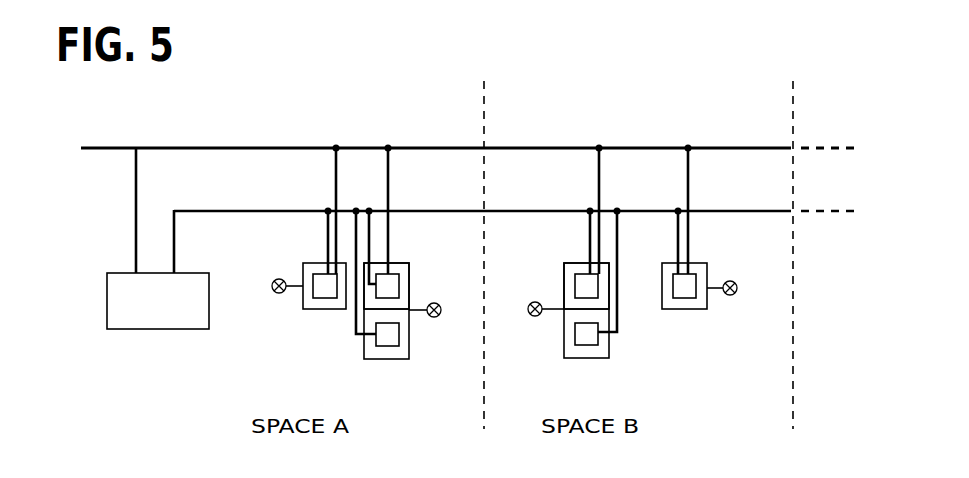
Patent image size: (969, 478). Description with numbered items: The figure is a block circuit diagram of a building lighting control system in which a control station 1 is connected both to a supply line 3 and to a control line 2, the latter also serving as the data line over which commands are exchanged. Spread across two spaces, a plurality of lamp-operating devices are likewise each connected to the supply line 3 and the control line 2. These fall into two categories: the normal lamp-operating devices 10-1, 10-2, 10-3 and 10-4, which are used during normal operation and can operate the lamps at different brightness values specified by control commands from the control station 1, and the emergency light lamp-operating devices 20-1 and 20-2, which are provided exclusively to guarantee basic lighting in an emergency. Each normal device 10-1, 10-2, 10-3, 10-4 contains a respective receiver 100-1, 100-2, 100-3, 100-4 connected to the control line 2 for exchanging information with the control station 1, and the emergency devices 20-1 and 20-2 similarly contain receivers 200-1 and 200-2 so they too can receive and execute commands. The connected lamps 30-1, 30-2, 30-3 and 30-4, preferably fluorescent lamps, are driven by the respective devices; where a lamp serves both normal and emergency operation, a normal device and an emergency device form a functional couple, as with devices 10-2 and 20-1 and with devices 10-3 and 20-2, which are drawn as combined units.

The control station 1 is at (160, 329).
The control line 2 is at (213, 219).
The supply line 3 is at (213, 157).
The normal lamp-operating device 10-1 is at (322, 309).
The normal lamp-operating device 10-2 is at (390, 262).
The normal lamp-operating device 10-3 is at (563, 273).
The normal lamp-operating device 10-4 is at (684, 309).
The receiver 100-1 is at (320, 272).
The receiver 100-2 is at (397, 272).
The receiver 100-3 is at (582, 271).
The receiver 100-4 is at (690, 272).
The emergency light lamp-operating device 20-1 is at (410, 348).
The emergency light lamp-operating device 20-2 is at (610, 348).
The receiver 200-1 is at (388, 348).
The receiver 200-2 is at (580, 346).
The lamp 30-1 is at (274, 293).
The lamp 30-2 is at (437, 302).
The lamp 30-3 is at (533, 317).
The lamp 30-4 is at (734, 279).